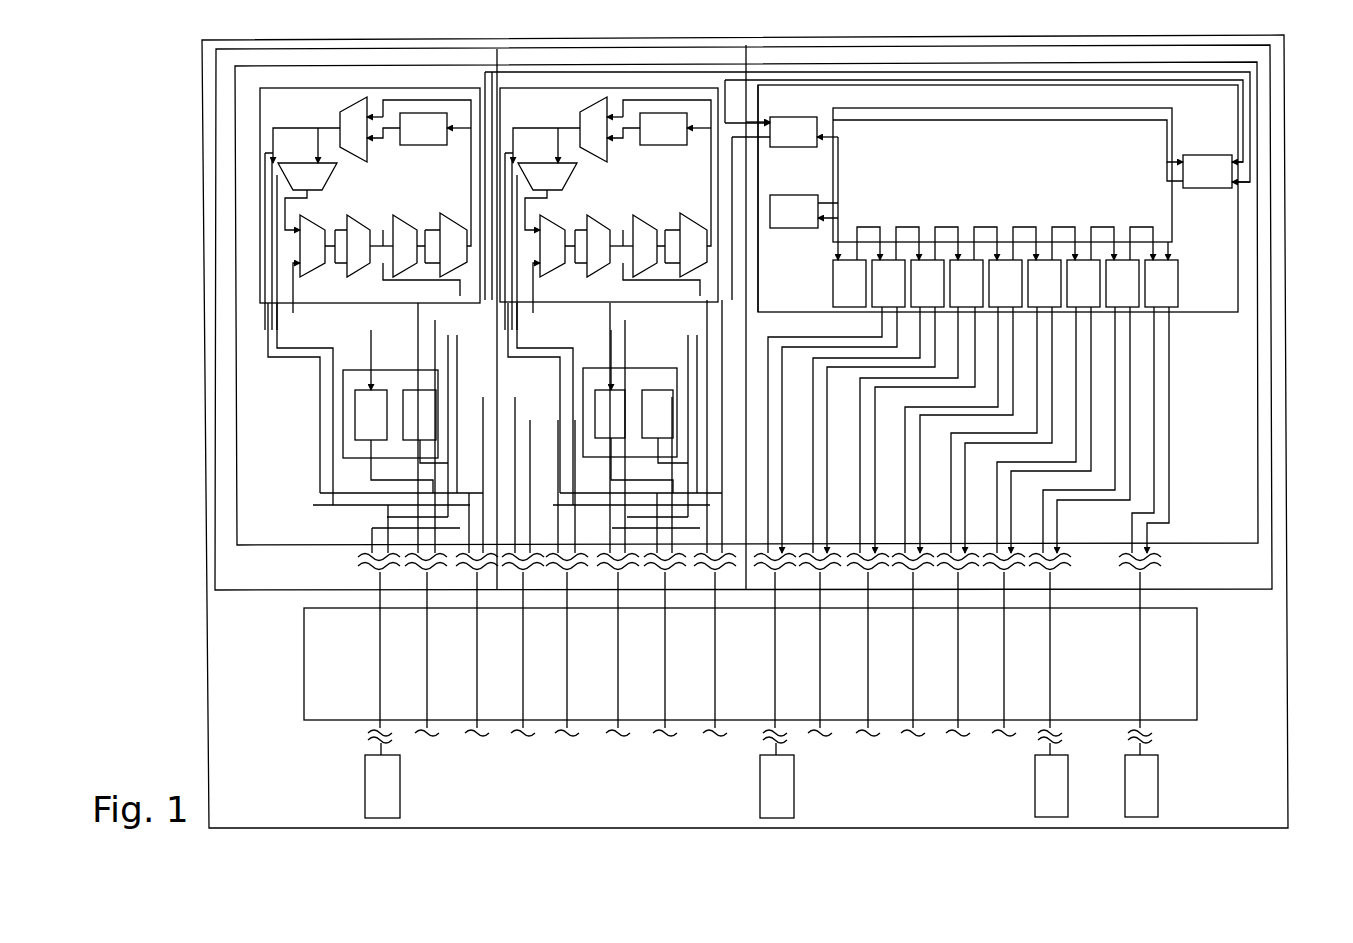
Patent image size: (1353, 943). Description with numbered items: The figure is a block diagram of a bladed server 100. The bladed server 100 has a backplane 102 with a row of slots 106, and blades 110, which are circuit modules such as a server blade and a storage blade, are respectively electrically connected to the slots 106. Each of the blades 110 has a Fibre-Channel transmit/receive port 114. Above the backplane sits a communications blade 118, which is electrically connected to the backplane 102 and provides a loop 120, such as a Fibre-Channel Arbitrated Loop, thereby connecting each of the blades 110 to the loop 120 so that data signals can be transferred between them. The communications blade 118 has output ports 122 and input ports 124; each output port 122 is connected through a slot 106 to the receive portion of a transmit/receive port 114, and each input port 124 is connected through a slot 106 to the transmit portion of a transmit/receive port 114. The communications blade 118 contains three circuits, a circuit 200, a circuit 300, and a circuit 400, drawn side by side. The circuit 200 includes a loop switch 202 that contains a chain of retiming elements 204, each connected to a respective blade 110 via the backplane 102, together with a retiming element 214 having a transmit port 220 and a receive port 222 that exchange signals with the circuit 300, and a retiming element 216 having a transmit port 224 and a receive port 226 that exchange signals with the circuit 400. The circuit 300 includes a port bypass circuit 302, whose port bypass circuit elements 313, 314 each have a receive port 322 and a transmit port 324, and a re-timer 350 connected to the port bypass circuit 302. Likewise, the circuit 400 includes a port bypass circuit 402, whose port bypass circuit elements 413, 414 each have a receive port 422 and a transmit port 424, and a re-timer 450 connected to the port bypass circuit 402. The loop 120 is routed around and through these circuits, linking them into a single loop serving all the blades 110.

The bladed server 100 is at (1290, 38).
The backplane 102 is at (304, 697).
The slots 106 is at (382, 693).
The blades 110 is at (392, 789).
The Fibre-Channel transmit/receive port 114 is at (375, 752).
The communications blade 118 is at (243, 119).
The loop 120 is at (1262, 97).
The output ports 122 is at (395, 560).
The input ports 124 is at (372, 556).
The circuit 200 is at (814, 46).
The loop switch 202 is at (845, 102).
The retiming elements 204 is at (888, 263).
The retiming element 214 is at (793, 132).
The retiming element 216 is at (1207, 171).
The transmit port 220 is at (770, 147).
The receive port 222 is at (766, 118).
The transmit port 224 is at (1234, 153).
The receive port 226 is at (1232, 188).
The circuit 300 is at (526, 46).
The port bypass circuit 302 is at (547, 105).
The port bypass circuit element 313 is at (598, 246).
The port bypass circuit element 314 is at (645, 246).
The receive port 322 is at (628, 280).
The transmit port 324 is at (624, 240).
The re-timer 350 is at (626, 382).
The circuit 400 is at (287, 46).
The port bypass circuit 402 is at (332, 105).
The port bypass circuit element 413 is at (358, 246).
The port bypass circuit element 414 is at (405, 246).
The receive port 422 is at (388, 280).
The transmit port 424 is at (384, 240).
The re-timer 450 is at (347, 392).